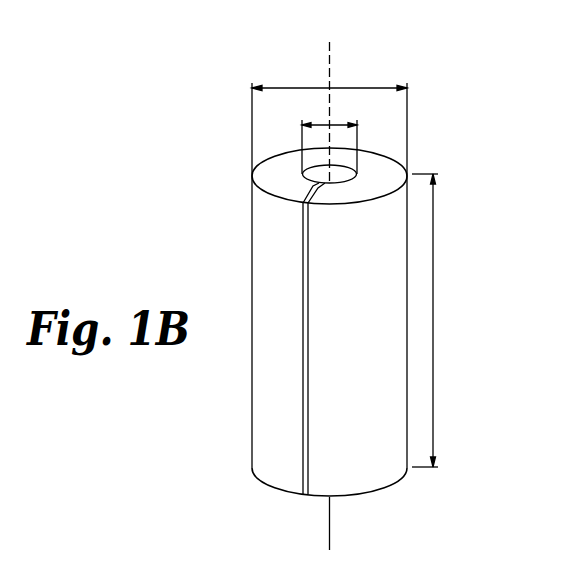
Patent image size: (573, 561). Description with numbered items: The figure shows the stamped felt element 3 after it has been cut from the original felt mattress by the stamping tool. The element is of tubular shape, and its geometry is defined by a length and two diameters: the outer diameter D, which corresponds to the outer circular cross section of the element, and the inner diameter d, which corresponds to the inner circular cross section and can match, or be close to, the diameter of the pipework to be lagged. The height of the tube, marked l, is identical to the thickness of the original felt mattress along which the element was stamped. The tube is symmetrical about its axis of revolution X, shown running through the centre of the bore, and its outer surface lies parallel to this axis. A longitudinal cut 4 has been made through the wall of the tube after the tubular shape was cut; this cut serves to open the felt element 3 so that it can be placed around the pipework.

The stamped felt element 3 is at (252, 253).
The longitudinal cut 4 is at (303, 408).
The axis of revolution X-X' X is at (342, 295).
The outer diameter D is at (329, 118).
The inner diameter d is at (329, 138).
The thickness (length) l is at (430, 320).